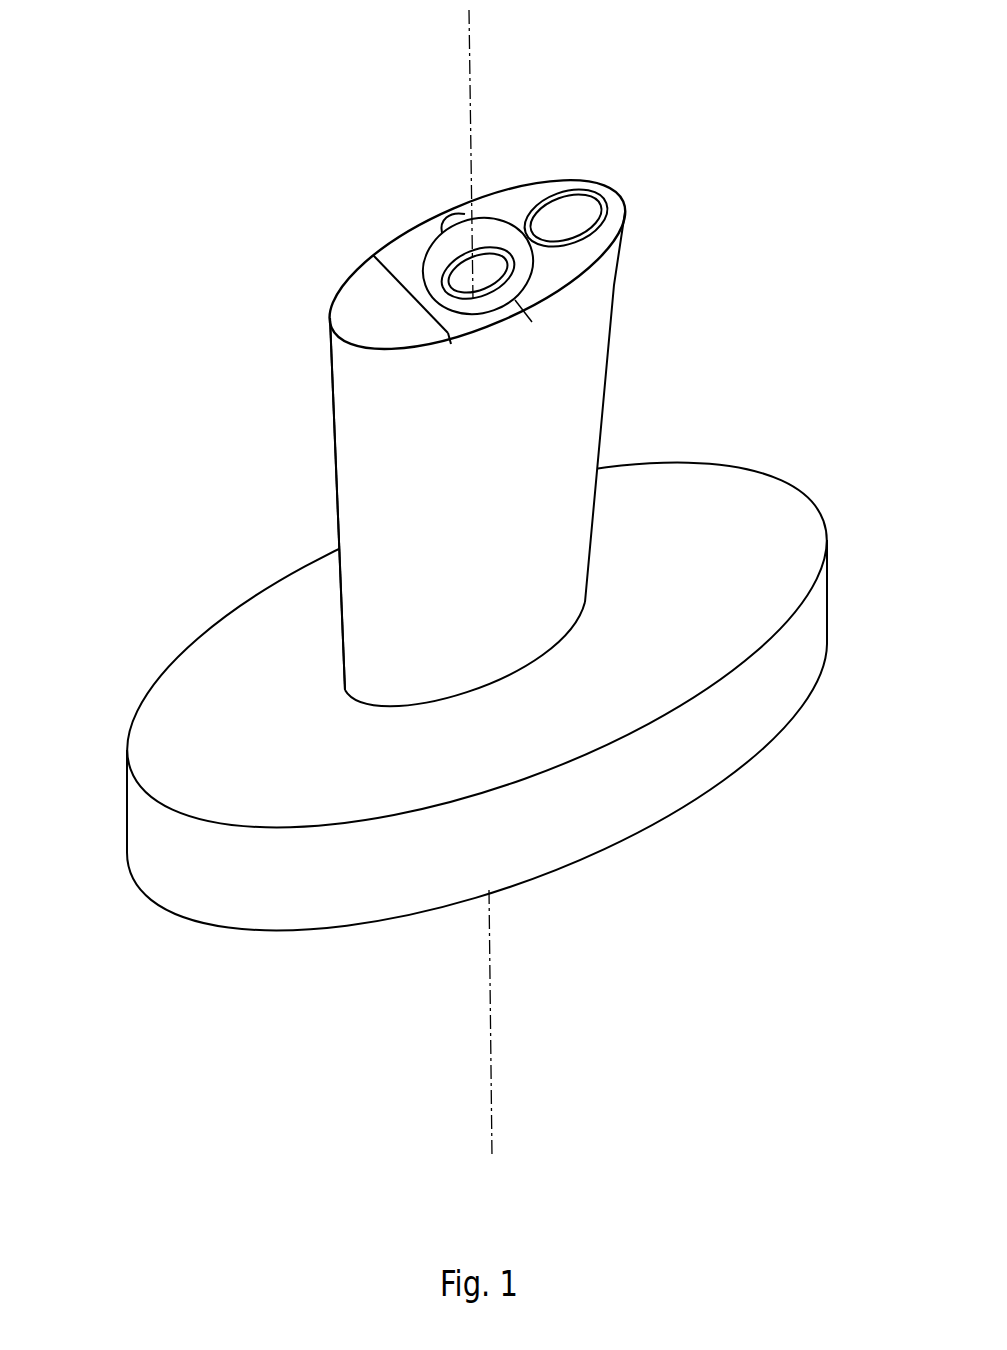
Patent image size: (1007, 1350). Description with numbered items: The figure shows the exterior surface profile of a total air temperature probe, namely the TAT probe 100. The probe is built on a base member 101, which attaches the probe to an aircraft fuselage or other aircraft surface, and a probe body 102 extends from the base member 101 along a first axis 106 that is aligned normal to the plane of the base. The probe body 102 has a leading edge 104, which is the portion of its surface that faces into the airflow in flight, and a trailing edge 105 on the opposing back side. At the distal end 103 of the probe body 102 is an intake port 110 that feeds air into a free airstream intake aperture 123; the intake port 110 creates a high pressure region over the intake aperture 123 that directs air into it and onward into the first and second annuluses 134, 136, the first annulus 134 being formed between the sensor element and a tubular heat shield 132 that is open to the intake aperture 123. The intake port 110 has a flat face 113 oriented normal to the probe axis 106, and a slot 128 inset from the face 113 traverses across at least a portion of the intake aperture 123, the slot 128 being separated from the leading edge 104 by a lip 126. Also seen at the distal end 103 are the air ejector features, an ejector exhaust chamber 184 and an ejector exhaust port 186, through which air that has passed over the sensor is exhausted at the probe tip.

The TAT probe 100 is at (100, 213).
The base member 101 is at (164, 679).
The probe body 102 is at (343, 631).
The distal end 103 is at (547, 157).
The leading edge 104 is at (340, 500).
The trailing edge 105 is at (609, 361).
The first axis 106 is at (470, 43).
The intake port 110 is at (338, 263).
The face of the intake port 113 is at (405, 313).
The free airstream intake aperture 123 is at (461, 244).
The lip 126 is at (360, 346).
The slot 128 is at (467, 340).
The tubular heat shield 132 is at (486, 303).
The first annulus 134 is at (478, 257).
The second annulus 136 is at (431, 273).
The ejector exhaust chamber 184 is at (568, 205).
The ejector exhaust port 186 is at (604, 221).